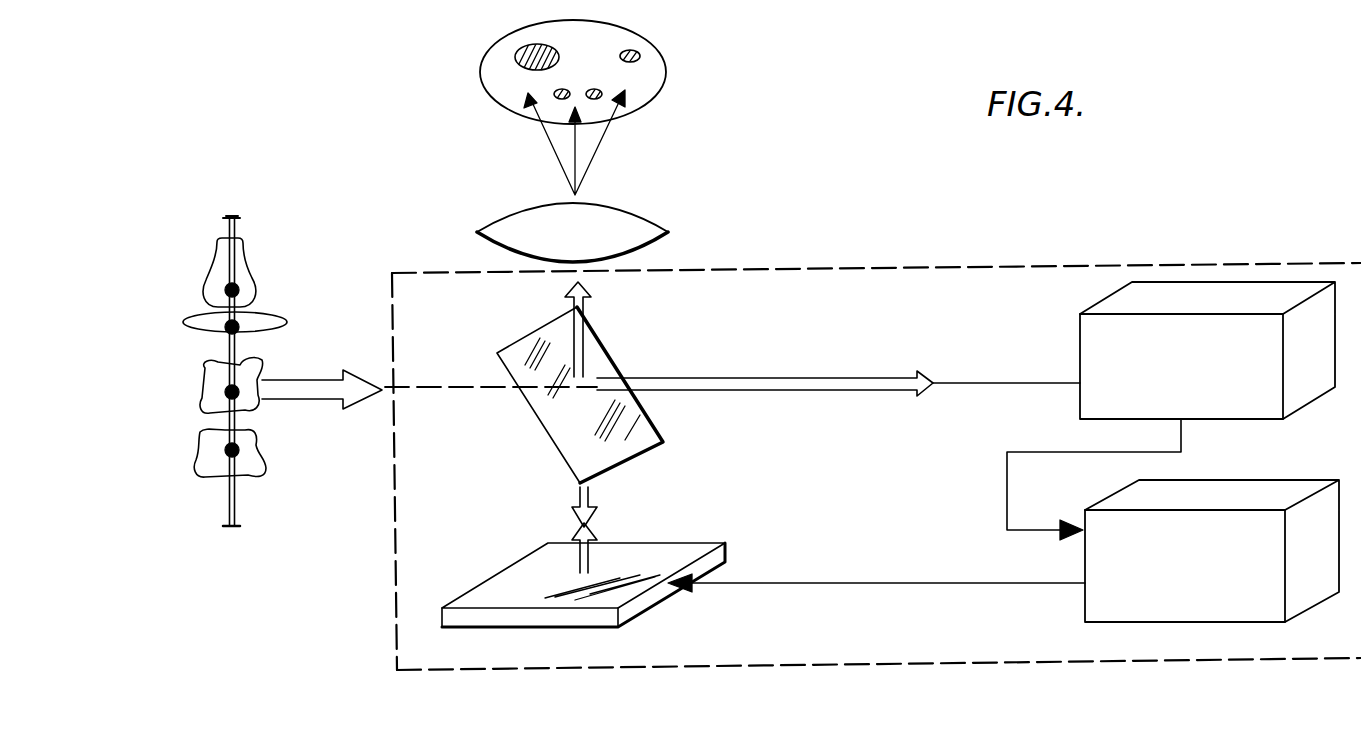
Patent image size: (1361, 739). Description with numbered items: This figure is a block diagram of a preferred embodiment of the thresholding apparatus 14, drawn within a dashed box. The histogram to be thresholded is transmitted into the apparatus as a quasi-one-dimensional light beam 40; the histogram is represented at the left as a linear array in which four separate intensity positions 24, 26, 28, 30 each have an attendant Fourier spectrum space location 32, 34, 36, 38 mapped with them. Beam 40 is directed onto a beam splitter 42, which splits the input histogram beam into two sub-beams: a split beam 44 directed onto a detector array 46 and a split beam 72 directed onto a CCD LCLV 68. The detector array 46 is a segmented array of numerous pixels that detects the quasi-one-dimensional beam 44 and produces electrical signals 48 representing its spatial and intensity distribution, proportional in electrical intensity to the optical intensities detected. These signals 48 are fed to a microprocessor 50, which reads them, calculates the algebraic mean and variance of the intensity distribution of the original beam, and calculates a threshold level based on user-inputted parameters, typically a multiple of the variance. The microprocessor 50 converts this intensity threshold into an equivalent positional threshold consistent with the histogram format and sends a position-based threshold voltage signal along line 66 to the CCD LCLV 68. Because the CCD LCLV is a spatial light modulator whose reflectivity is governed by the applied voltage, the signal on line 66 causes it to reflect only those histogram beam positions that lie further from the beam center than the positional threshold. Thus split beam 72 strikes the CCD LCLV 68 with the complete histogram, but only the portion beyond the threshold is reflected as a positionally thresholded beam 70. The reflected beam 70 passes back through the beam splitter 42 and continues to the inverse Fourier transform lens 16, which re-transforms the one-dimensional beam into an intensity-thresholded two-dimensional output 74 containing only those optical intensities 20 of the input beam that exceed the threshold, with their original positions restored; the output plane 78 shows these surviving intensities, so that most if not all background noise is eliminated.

The thresholding apparatus 14 is at (1107, 265).
The inverse Fourier transform lens 16 is at (660, 216).
The optical intensities 20 is at (553, 90).
The intensity position 24 is at (240, 291).
The intensity position 26 is at (240, 327).
The intensity position 28 is at (262, 400).
The intensity position 30 is at (267, 452).
The Fourier spectrum space location 32 is at (219, 246).
The Fourier spectrum space location 34 is at (203, 315).
The Fourier spectrum space location 36 is at (216, 372).
The Fourier spectrum space location 38 is at (210, 478).
The quasi-one-dimensional light beam 40 is at (325, 379).
The beam splitter 42 is at (520, 337).
The split beam 44 is at (797, 378).
The detector array 46 is at (1080, 340).
The electrical signals 48 is at (1007, 505).
The microprocessor 50 is at (1085, 612).
The line 66 is at (867, 583).
The CCD LCLV 68 is at (705, 543).
The positionally thresholded beam 70 is at (585, 348).
The split beam 72 is at (597, 492).
The intensity-thresholded two-dimensional output 74 is at (600, 160).
The image plane / field of view 78 is at (667, 66).